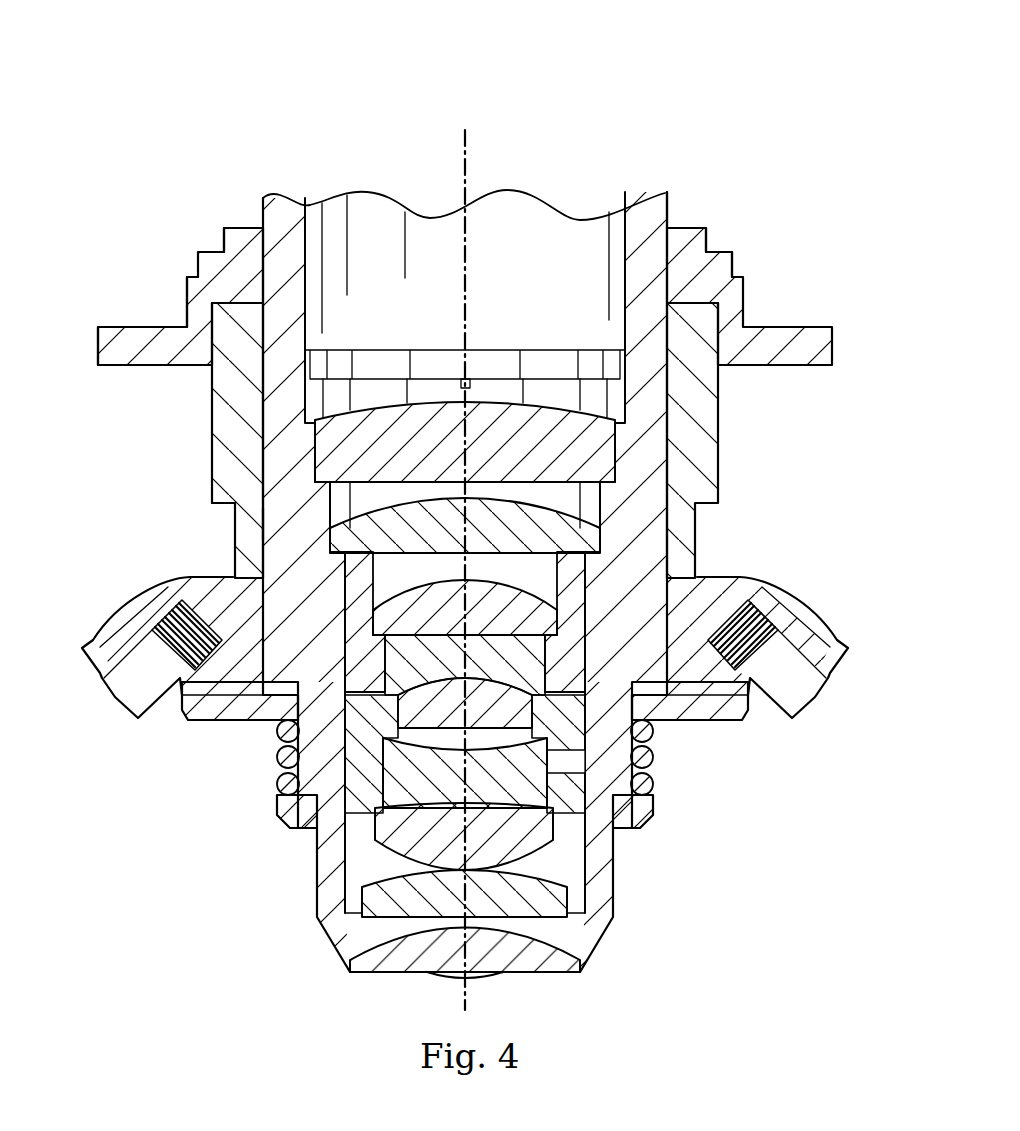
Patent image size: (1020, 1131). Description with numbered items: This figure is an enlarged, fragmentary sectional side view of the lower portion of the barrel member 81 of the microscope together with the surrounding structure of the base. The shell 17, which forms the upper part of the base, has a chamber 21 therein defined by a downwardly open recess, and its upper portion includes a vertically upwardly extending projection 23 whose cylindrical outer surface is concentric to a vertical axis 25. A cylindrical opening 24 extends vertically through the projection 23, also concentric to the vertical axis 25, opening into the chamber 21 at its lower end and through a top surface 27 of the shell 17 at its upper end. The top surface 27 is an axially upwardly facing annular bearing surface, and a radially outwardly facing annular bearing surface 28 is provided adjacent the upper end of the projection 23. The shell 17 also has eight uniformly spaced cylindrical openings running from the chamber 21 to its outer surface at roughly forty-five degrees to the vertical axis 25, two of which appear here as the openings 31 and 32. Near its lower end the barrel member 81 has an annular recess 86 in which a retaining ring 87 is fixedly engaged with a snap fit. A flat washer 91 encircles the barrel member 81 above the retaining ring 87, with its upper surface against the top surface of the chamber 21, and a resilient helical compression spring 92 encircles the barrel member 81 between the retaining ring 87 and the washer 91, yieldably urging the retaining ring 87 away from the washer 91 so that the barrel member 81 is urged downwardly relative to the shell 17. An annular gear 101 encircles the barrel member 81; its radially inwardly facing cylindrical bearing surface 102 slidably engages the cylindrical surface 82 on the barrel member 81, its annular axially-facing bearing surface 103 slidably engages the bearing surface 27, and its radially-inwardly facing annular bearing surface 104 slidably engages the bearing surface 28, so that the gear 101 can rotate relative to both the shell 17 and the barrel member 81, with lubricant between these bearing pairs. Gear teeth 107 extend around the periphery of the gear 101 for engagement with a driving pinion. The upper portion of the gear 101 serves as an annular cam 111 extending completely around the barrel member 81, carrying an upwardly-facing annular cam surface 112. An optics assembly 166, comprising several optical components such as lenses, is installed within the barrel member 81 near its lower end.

The optics assembly 166 is at (517, 343).
The vertical axis 25 is at (467, 152).
The top surface 27 is at (296, 288).
The barrel member 81 is at (662, 192).
The cylindrical surface 82 is at (672, 206).
The cam surface 112 is at (704, 228).
The annular cam 111 is at (722, 262).
The annular gear 101 is at (232, 233).
The cylindrical bearing surface 102 is at (262, 222).
The axially-facing bearing surface 103 is at (192, 330).
The gear teeth 107 is at (98, 350).
The annular bearing surface 28 is at (212, 356).
The annular bearing surface 104 is at (212, 352).
The projection 23 is at (212, 479).
The cylindrical opening 24 is at (250, 522).
The cylindrical opening 31 is at (120, 648).
The cylindrical opening 32 is at (812, 648).
The shell 17 is at (815, 616).
The chamber 21 is at (746, 680).
The flat washer 91 is at (198, 722).
The helical compression spring 92 is at (277, 757).
The annular recess 86 is at (292, 825).
The retaining ring 87 is at (652, 812).